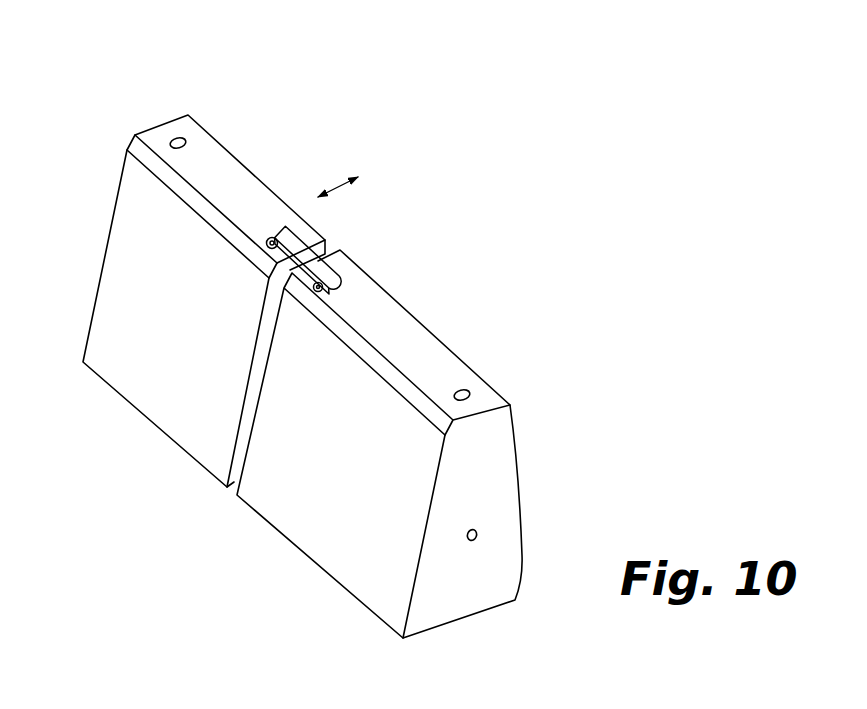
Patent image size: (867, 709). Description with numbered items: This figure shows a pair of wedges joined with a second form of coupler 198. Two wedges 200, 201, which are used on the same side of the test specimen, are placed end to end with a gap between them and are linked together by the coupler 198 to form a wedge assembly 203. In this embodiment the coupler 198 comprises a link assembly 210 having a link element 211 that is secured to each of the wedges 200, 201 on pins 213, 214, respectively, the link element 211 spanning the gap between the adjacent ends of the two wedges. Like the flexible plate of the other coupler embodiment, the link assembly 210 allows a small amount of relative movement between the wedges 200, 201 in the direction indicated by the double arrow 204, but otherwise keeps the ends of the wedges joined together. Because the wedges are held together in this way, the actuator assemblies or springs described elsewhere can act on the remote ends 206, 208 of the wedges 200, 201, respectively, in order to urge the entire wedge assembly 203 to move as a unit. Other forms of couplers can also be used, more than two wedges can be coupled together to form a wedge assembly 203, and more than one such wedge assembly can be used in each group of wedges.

The coupler 198 is at (298, 289).
The wedge 200 is at (176, 260).
The wedge 201 is at (405, 444).
The wedge assembly 203 is at (161, 118).
The double arrow 204 is at (334, 185).
The remote end 206 is at (104, 251).
The remote end 208 is at (505, 546).
The link assembly 210 is at (355, 274).
The link element 211 is at (271, 271).
The pin 213 is at (266, 244).
The pin 214 is at (317, 296).